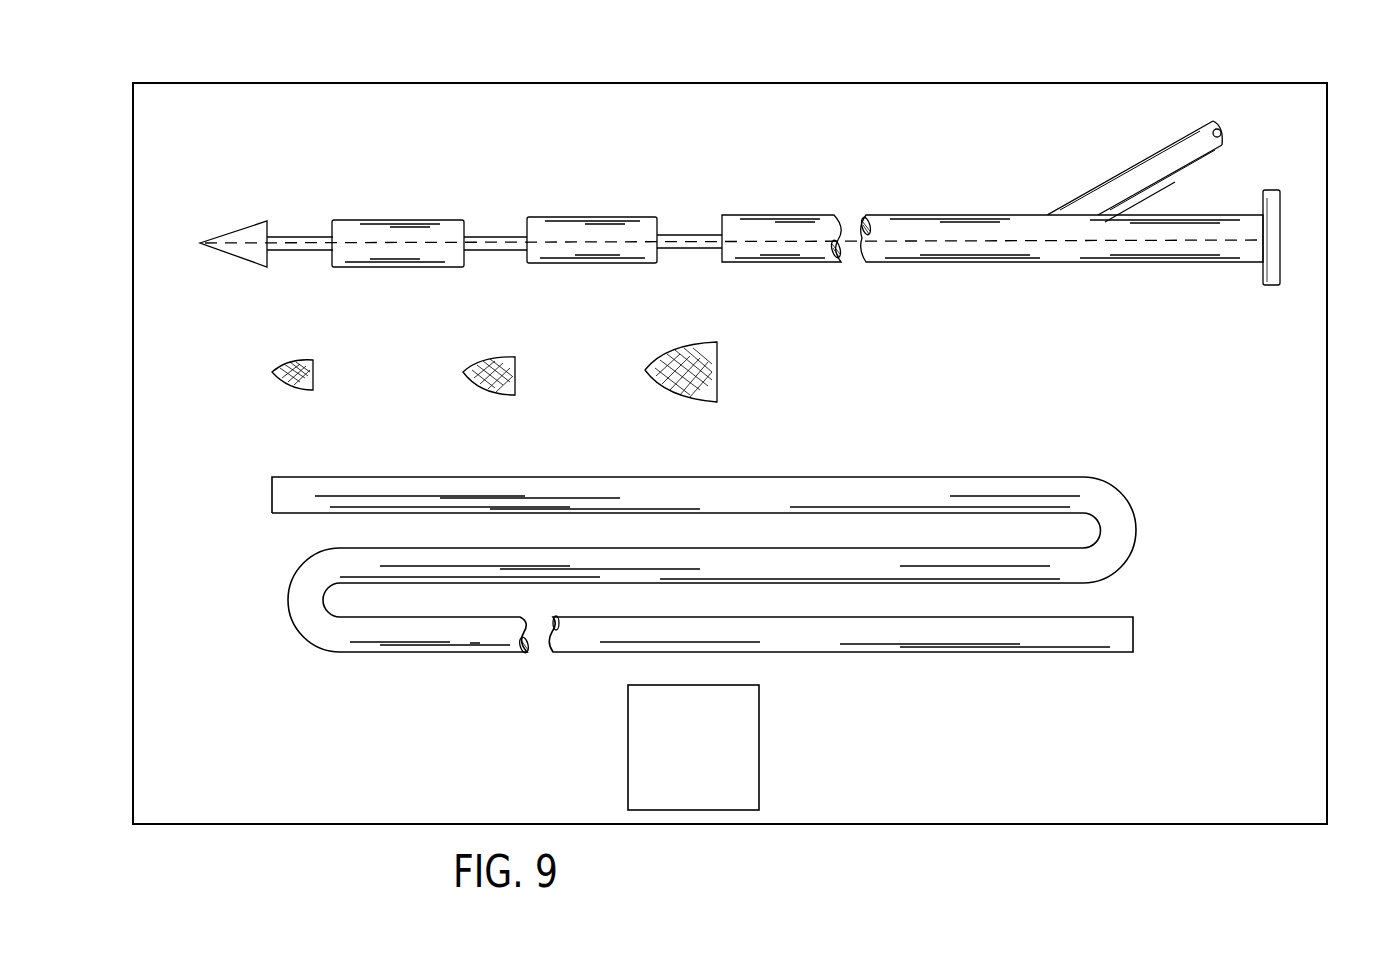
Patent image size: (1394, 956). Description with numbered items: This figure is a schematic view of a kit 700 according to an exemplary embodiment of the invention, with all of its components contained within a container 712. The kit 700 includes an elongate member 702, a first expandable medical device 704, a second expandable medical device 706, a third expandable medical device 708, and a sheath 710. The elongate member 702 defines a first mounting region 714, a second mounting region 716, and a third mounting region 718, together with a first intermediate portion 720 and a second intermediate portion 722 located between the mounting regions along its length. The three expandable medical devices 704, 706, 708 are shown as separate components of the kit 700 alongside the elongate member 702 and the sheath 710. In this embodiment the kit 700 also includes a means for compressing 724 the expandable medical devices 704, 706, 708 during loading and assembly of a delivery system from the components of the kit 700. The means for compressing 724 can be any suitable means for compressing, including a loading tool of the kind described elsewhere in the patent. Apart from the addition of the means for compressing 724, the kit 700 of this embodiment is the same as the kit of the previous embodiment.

The kit 700 is at (375, 68).
The elongate member 702 is at (914, 215).
The first expandable medical device 704 is at (298, 360).
The second expandable medical device 706 is at (498, 357).
The third expandable medical device 708 is at (690, 343).
The sheath 710 is at (841, 475).
The container 712 is at (1327, 422).
The first mounting region 714 is at (294, 236).
The second mounting region 716 is at (490, 236).
The third mounting region 718 is at (689, 235).
The first intermediate portion 720 is at (401, 220).
The second intermediate portion 722 is at (619, 217).
The means for compressing 724 is at (759, 722).